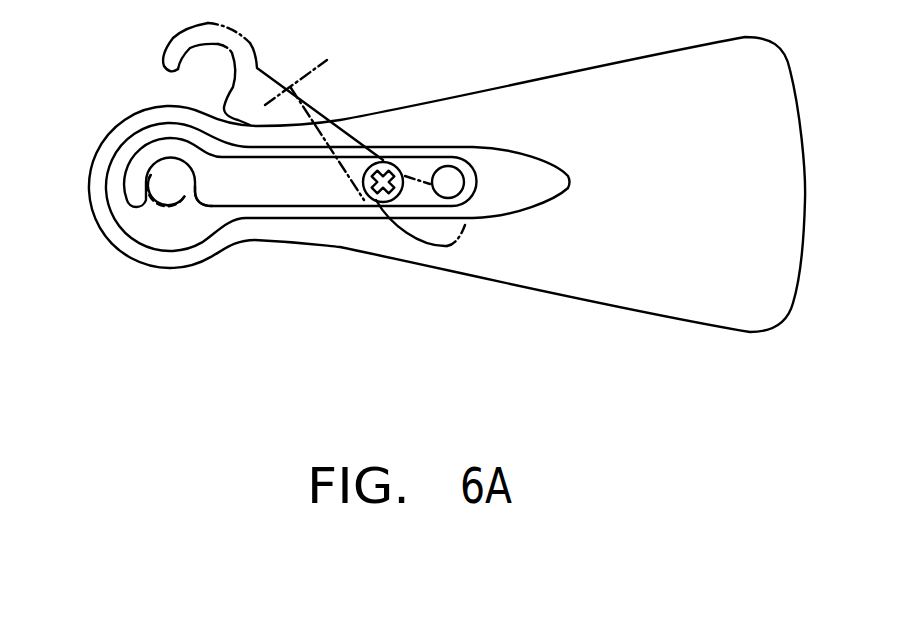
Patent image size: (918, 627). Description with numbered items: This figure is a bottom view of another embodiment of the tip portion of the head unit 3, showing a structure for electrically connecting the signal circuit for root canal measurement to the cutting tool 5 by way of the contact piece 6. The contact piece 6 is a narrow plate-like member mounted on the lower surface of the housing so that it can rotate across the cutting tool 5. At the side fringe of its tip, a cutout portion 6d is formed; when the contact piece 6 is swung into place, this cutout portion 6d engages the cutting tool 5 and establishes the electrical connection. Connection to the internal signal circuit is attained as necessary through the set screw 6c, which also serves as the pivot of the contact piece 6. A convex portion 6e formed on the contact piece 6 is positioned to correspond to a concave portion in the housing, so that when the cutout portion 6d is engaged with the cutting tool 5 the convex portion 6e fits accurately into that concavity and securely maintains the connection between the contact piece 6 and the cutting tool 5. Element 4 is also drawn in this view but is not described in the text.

The head unit 3 is at (656, 271).
The latch plate 4 is at (106, 131).
The cutting tool 5 is at (165, 192).
The contact piece 6 is at (297, 186).
The set screw 6c is at (383, 202).
The cutout portion 6d is at (197, 208).
The convex portion 6e is at (448, 176).